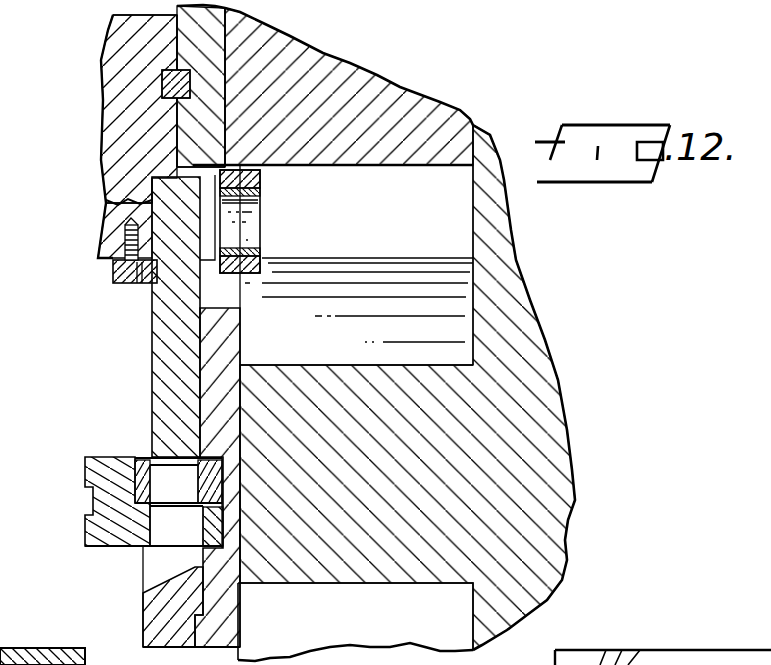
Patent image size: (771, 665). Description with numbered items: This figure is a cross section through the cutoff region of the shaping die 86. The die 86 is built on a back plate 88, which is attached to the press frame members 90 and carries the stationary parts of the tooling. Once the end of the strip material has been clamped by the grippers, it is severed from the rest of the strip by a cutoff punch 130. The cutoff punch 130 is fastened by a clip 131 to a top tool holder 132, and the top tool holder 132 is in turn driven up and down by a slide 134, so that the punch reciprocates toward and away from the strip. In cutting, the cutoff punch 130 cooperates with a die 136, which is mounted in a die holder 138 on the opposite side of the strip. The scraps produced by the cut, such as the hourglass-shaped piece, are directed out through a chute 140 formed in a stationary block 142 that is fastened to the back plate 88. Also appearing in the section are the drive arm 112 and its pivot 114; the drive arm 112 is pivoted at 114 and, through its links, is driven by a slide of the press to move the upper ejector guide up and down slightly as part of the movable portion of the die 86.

The die 86 is at (124, 326).
The back plate 88 is at (230, 344).
The press frame members 90 is at (388, 572).
The drive arm 112 is at (253, 182).
The pivot 114 is at (253, 222).
The cutoff punch 130 is at (152, 360).
The clip 131 is at (115, 268).
The top tool holder 132 is at (110, 223).
The slide 134 is at (377, 87).
The die 136 is at (160, 457).
The die holder 138 is at (85, 467).
The chute 140 is at (166, 582).
The stationary block 142 is at (152, 615).